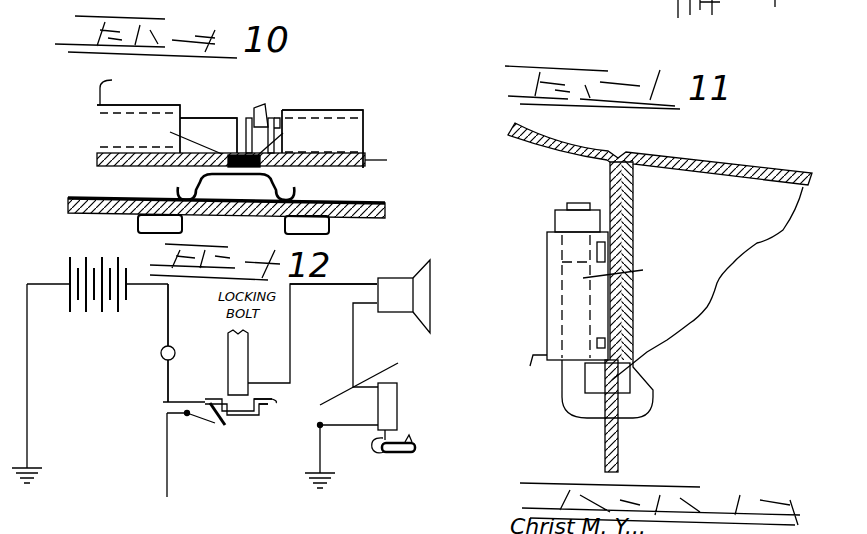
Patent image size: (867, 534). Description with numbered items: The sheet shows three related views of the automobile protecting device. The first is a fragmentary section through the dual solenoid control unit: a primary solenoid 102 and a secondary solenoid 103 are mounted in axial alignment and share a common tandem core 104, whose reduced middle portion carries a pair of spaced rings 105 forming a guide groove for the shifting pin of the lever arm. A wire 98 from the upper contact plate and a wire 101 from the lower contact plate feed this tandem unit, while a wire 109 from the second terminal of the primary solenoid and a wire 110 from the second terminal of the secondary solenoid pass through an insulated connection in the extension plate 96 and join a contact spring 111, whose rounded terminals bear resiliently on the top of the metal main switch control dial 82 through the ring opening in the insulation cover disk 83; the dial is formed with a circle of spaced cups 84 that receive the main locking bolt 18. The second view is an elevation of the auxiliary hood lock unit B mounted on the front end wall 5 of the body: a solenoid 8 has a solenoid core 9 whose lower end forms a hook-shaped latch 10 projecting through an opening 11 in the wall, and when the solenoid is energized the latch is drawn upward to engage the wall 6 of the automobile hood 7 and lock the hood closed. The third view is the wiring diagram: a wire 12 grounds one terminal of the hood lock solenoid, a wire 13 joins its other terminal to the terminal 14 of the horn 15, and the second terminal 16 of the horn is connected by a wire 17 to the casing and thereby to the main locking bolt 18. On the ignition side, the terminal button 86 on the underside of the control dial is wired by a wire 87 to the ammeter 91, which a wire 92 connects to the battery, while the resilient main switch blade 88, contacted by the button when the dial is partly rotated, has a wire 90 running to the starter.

In FIG. 10, the wire 98 is at (370, 90).
In FIG. 10, the wire 101 is at (108, 90).
In FIG. 10, the primary solenoid 102 is at (340, 108).
In FIG. 10, the secondary solenoid 103 is at (146, 115).
In FIG. 10, the tandem core 104 is at (200, 121).
In FIG. 10, the spaced rings 105 is at (258, 108).
In FIG. 10, the extension plate 96 is at (97, 161).
In FIG. 10, the wire 109 is at (280, 166).
In FIG. 10, the wire 110 is at (193, 160).
In FIG. 10, the contact spring 111 is at (280, 185).
In FIG. 10, the main switch control dial 82 is at (70, 210).
In FIG. 12, the main switch control dial 82 is at (276, 404).
In FIG. 10, the insulation cover disk 83 is at (70, 198).
In FIG. 12, the insulation cover disk 83 is at (110, 312).
In FIG. 10, the cups 84 is at (140, 222).
In FIG. 12, the cups 84 is at (293, 462).
In FIG. 12, the wire 92 is at (168, 316).
In FIG. 12, the main locking bolt 18 is at (276, 323).
In FIG. 12, the wire 87 is at (168, 385).
In FIG. 12, the ammeter 91 is at (145, 370).
In FIG. 12, the terminal button 86 is at (238, 421).
In FIG. 12, the main switch blade 88 is at (222, 470).
In FIG. 12, the wire 90 is at (166, 450).
In FIG. 12, the wire 17 is at (351, 283).
In FIG. 12, the second terminal 16 is at (376, 282).
In FIG. 12, the horn 15 is at (417, 302).
In FIG. 12, the terminal 14 is at (369, 312).
In FIG. 12, the wire 13 is at (353, 362).
In FIG. 11, the wire 13 is at (547, 240).
In FIG. 12, the wire 12 is at (343, 428).
In FIG. 11, the wire 12 is at (530, 373).
In FIG. 12, the solenoid 8 is at (387, 407).
In FIG. 11, the solenoid 8 is at (570, 303).
In FIG. 12, the solenoid core 9 is at (377, 453).
In FIG. 11, the solenoid core 9 is at (579, 203).
In FIG. 12, the hook-shaped latch 10 is at (410, 437).
In FIG. 11, the hook-shaped latch 10 is at (637, 402).
In FIG. 11, the automobile hood 7 is at (718, 168).
In FIG. 11, the wall 6 is at (630, 238).
In FIG. 11, the auxiliary hood lock unit B is at (621, 274).
In FIG. 11, the opening 11 is at (707, 283).
In FIG. 11, the front end wall 5 is at (618, 443).